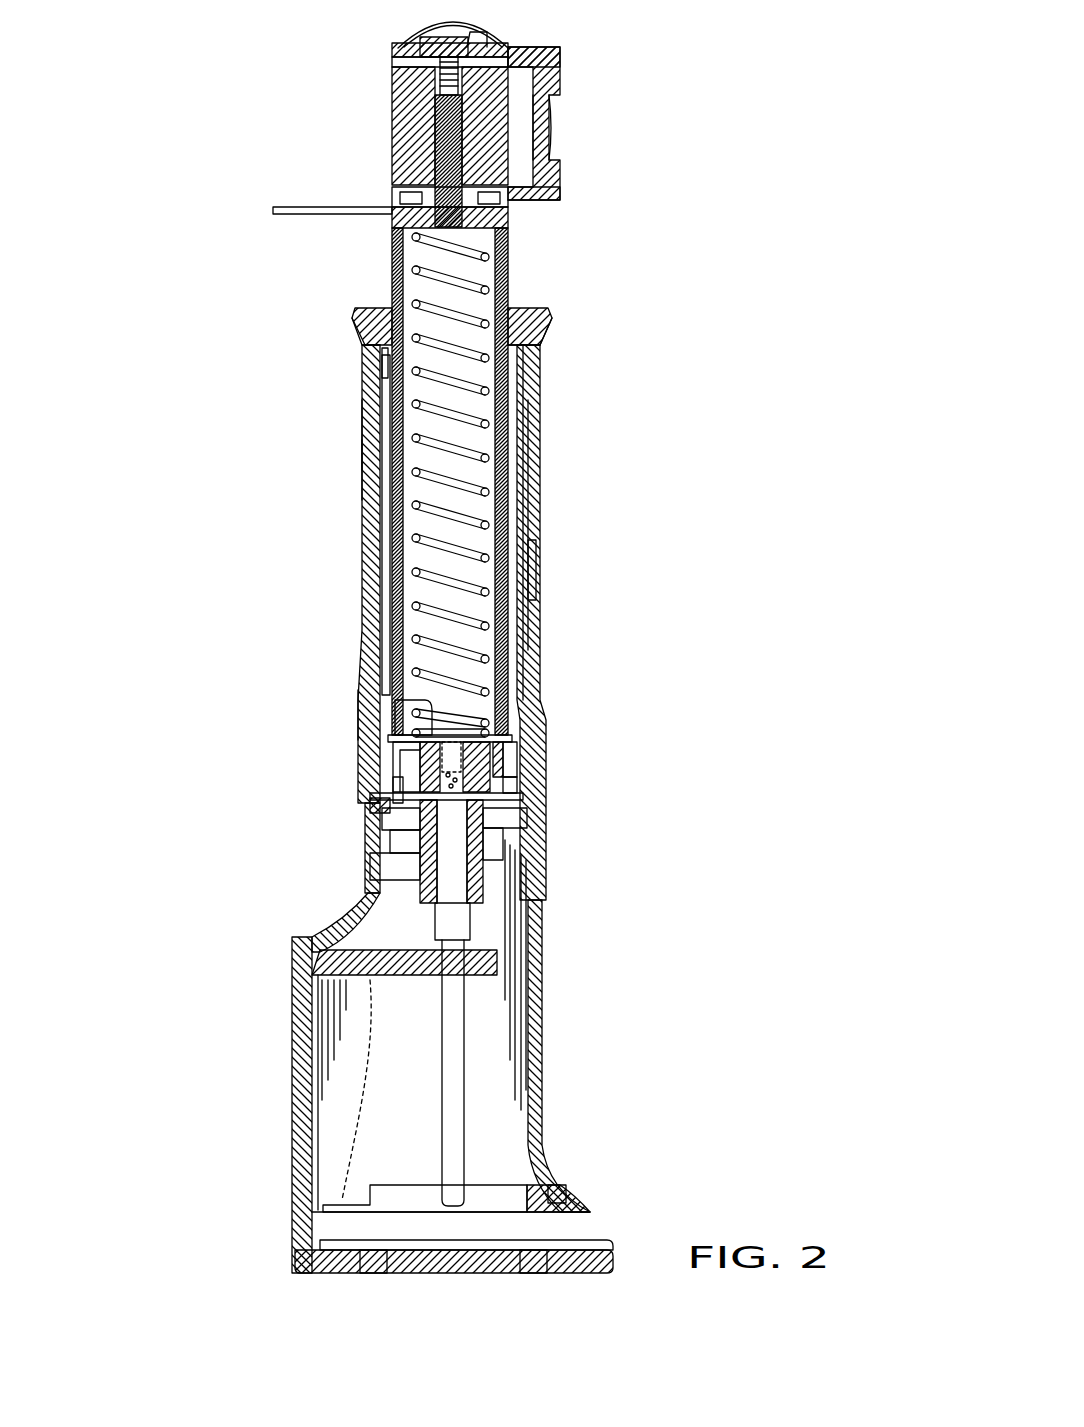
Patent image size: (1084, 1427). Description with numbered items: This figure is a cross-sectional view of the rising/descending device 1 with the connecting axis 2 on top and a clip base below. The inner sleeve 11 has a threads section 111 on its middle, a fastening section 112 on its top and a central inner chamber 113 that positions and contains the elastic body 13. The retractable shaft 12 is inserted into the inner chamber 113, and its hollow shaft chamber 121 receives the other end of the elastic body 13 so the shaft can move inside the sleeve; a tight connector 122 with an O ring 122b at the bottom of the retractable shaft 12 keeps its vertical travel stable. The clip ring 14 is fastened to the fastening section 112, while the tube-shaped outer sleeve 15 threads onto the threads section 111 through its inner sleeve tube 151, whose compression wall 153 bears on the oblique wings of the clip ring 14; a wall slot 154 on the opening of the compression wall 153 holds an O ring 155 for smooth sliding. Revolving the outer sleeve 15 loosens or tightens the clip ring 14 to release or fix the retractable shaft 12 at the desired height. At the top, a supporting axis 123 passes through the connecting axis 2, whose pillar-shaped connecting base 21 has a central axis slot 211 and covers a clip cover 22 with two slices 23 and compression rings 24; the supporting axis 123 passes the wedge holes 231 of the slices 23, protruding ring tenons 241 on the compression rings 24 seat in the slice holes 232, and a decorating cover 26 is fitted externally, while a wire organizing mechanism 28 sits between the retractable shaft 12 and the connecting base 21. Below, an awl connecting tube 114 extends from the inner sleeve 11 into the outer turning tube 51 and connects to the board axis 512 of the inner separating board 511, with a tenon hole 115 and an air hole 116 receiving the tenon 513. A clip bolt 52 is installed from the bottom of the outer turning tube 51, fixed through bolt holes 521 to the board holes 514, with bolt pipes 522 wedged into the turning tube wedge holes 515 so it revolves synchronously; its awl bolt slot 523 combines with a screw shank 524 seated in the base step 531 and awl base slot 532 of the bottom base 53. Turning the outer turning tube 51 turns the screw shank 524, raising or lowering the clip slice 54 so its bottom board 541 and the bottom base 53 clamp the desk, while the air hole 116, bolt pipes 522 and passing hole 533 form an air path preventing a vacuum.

The rising/descending device 1 is at (548, 480).
The connecting axis 2 is at (555, 78).
The inner sleeve 11 is at (375, 520).
The retractable shaft 12 is at (500, 455).
The elastic body 13 is at (385, 470).
The clip ring 14 is at (365, 335).
The outer sleeve 15 is at (366, 445).
The connecting base 21 is at (500, 125).
The clip cover 22 is at (556, 175).
The slices 23 is at (392, 50).
The compression rings 24 is at (392, 62).
The decorating cover 26 is at (432, 40).
The wire organizing mechanism 28 is at (508, 212).
The outer turning tube 51 is at (370, 682).
The clip bolt 52 is at (549, 845).
The bottom base 53 is at (542, 1030).
The clip slice 54 is at (298, 1228).
The threads section 111 is at (527, 530).
The fastening section 112 is at (366, 366).
The inner chamber 113 is at (522, 596).
The awl connecting tube 114 is at (370, 697).
The tenon hole 115 is at (546, 736).
The air hole 116 is at (372, 755).
The hollow shaft chamber 121 is at (490, 440).
The tight connector 122 is at (372, 722).
The O ring 122b is at (546, 712).
The supporting axis 123 is at (430, 158).
The inner sleeve tube 151 is at (375, 400).
The compression wall 153 is at (545, 335).
The wall slot 154 is at (375, 310).
The O ring 155 is at (528, 312).
The central axis slot 211 is at (435, 115).
The wedge holes 231 is at (466, 40).
The slice holes 232 is at (548, 55).
The protruding ring tenon 241 is at (492, 44).
The inner separating board 511 is at (549, 826).
The board axis 512 is at (365, 788).
The tenon 513 is at (547, 760).
The board holes 514 is at (366, 796).
The turning tube wedge holes 515 is at (549, 806).
The bolt holes 521 is at (375, 812).
The bolt pipes 522 is at (548, 780).
The awl bolt slot 523 is at (392, 878).
The screw shank 524 is at (458, 920).
The base step 531 is at (370, 832).
The awl base slot 532 is at (352, 910).
The passing hole 533 is at (549, 870).
The bottom board 541 is at (545, 1240).